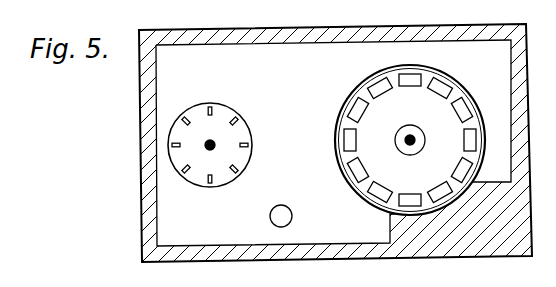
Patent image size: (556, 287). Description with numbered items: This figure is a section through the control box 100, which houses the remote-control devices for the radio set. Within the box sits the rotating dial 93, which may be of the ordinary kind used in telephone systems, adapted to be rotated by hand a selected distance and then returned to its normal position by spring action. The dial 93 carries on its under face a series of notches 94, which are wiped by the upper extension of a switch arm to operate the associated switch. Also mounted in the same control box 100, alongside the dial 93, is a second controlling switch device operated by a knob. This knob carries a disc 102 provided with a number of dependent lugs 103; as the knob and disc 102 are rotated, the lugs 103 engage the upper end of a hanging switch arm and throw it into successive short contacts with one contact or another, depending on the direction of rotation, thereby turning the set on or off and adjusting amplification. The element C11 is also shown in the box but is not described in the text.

The control box 100 is at (139, 232).
The disc 102 is at (210, 145).
The dependent lugs 103 is at (182, 120).
The rotating dial 93 is at (410, 140).
The notches 94 is at (361, 166).
The contact C11 is at (280, 210).